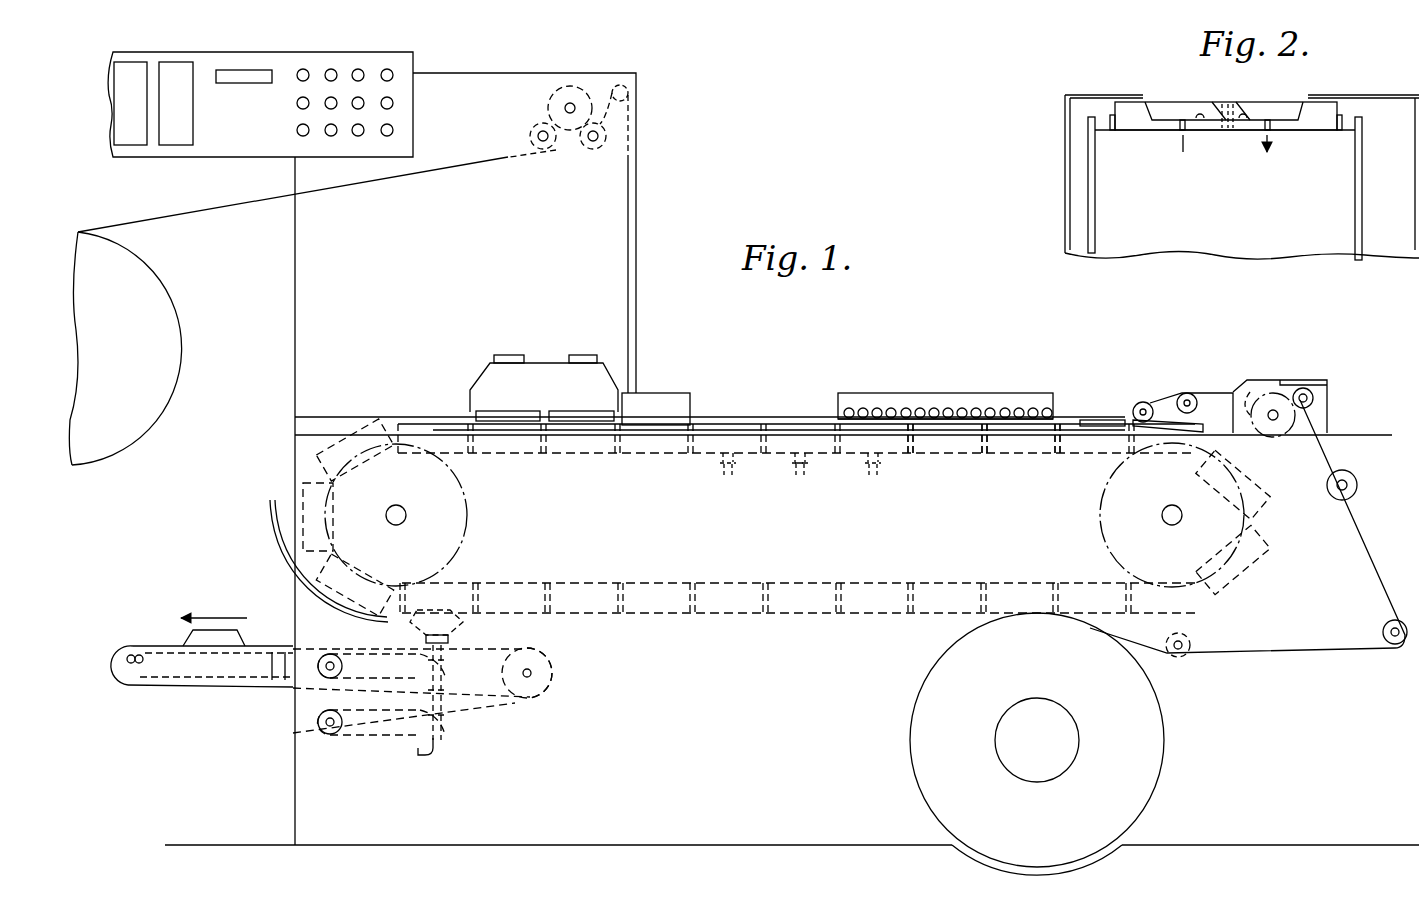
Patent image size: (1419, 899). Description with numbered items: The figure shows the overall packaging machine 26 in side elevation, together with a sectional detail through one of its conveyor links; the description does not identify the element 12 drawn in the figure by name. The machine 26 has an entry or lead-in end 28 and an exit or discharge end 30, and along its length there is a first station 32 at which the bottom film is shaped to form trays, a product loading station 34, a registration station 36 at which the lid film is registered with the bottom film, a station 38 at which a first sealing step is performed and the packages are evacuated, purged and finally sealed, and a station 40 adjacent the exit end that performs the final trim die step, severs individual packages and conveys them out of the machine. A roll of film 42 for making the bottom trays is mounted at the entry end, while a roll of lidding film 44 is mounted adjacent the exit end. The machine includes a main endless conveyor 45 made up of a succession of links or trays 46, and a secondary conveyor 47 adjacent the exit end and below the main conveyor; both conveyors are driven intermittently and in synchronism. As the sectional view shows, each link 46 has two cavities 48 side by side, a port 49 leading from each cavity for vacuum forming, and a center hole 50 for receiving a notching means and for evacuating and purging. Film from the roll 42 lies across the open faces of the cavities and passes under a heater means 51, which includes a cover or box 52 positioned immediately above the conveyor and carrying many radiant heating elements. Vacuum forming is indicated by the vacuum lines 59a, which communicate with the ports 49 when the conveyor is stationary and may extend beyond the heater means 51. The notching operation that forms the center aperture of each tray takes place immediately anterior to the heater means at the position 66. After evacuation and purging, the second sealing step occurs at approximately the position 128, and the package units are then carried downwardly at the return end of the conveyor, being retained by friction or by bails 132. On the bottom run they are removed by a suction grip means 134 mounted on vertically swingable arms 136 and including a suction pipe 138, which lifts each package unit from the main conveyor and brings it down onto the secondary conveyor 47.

In FIG. 1, the supply roll 12 is at (906, 709).
In FIG. 1, the machine 26 is at (945, 361).
In FIG. 1, the entry or lead-in end 28 is at (1346, 402).
In FIG. 1, the exit or discharge end 30 is at (275, 466).
In FIG. 1, the first station 32 is at (1172, 383).
In FIG. 1, the product loading area or station 34 is at (893, 379).
In FIG. 1, the registration station 36 is at (662, 386).
In FIG. 1, the station 38 is at (548, 354).
In FIG. 1, the station 40 is at (226, 606).
In FIG. 1, the roll of film or sheet material 42 is at (1383, 561).
In FIG. 1, the roll of film or sheet material 44 is at (188, 213).
In FIG. 1, the main endless conveyor 45 is at (931, 458).
In FIG. 2, the main endless conveyor 45 is at (1334, 110).
In FIG. 1, the links or trays 46 is at (1066, 451).
In FIG. 2, the links or trays 46 is at (1308, 126).
In FIG. 1, the secondary conveyor 47 is at (302, 693).
In FIG. 2, the cavities 48 is at (1243, 120).
In FIG. 2, the port 49 is at (1181, 126).
In FIG. 1, the center hole 50 is at (800, 455).
In FIG. 2, the center hole 50 is at (1228, 100).
In FIG. 1, the heater means 51 is at (975, 390).
In FIG. 1, the cover or box 52 is at (1004, 393).
In FIG. 1, the vacuum lines 59a is at (798, 477).
In FIG. 1, the notching position 66 is at (1082, 414).
In FIG. 1, the second sealing position 128 is at (454, 414).
In FIG. 1, the bails 132 is at (273, 521).
In FIG. 1, the suction grip means 134 is at (481, 628).
In FIG. 1, the vertically swingable arms 136 is at (373, 708).
In FIG. 1, the suction pipe 138 is at (438, 744).